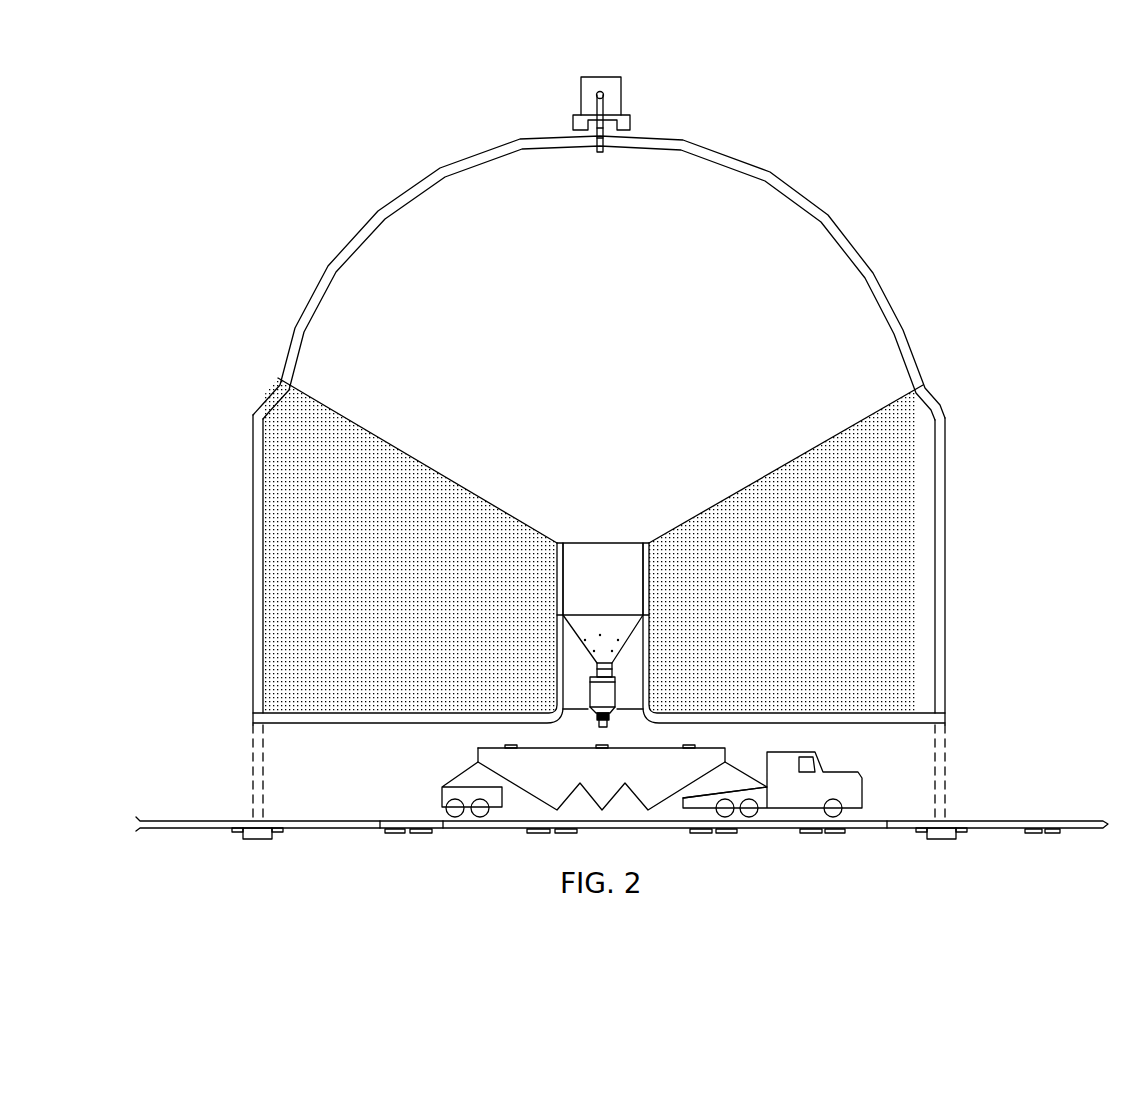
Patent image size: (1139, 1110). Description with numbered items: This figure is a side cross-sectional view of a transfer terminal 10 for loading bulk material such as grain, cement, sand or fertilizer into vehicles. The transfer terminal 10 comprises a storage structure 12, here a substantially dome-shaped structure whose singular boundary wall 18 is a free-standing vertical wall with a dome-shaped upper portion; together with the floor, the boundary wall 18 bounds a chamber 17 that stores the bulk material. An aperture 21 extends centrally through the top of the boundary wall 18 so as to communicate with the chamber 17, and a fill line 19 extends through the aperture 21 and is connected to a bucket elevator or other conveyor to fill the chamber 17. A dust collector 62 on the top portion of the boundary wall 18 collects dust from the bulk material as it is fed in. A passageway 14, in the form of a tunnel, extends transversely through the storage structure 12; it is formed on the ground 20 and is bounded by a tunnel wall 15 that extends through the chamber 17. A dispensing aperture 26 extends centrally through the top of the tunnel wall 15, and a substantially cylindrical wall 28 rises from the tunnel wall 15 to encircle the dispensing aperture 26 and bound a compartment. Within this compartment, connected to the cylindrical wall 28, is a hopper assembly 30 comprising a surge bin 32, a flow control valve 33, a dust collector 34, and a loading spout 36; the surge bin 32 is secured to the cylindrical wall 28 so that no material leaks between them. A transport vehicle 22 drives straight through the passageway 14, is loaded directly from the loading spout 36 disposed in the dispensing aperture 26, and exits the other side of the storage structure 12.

The transfer terminal 10 is at (980, 437).
The storage structure 12 is at (947, 622).
The passageway 14 is at (918, 782).
The tunnel wall 15 is at (372, 722).
The chamber 17 is at (788, 225).
The boundary wall 18 is at (900, 303).
The fill line 19 is at (603, 105).
The ground 20 is at (1060, 820).
The aperture 21 is at (612, 147).
The transport vehicle 22 is at (835, 773).
The dispensing aperture 26 is at (612, 728).
The cylindrical wall 28 is at (650, 640).
The hopper assembly 30 is at (598, 522).
The surge bin 32 is at (618, 555).
The flow control valve 33 is at (597, 667).
The dust collector 34 is at (607, 693).
The loading spout 36 is at (617, 715).
The dust collector 62 is at (590, 83).